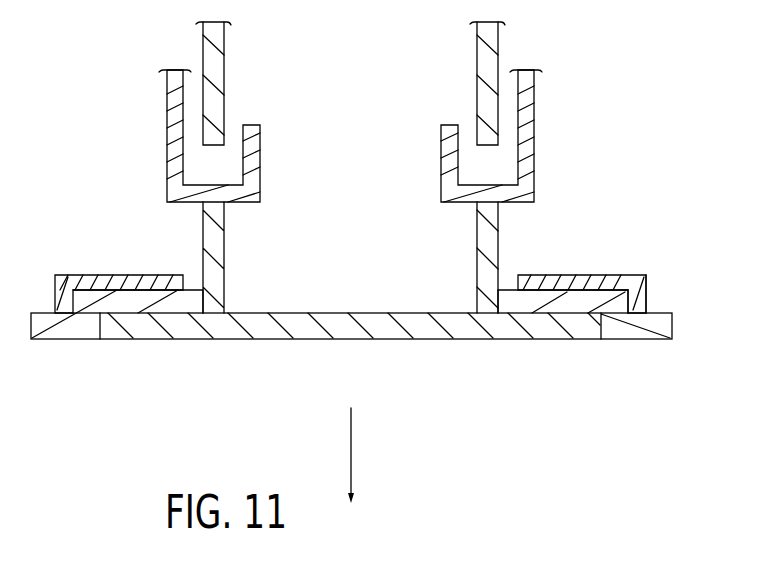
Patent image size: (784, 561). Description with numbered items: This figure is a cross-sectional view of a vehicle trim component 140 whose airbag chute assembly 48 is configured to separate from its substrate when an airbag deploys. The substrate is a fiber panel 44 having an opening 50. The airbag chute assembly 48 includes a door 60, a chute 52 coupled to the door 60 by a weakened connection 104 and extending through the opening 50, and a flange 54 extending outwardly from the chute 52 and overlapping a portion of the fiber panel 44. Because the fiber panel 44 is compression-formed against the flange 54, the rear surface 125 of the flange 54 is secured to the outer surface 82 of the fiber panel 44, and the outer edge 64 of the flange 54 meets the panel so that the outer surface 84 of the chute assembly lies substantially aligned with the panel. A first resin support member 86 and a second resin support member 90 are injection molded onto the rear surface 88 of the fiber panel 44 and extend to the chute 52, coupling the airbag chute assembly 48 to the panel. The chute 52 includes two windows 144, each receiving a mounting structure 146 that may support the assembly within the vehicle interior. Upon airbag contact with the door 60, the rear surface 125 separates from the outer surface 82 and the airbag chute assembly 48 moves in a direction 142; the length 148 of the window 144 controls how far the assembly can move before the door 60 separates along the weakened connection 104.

The fiber panel 44 is at (76, 323).
The airbag chute assembly 48 is at (370, 260).
The opening 50 is at (326, 220).
The chute 52 is at (500, 213).
The flange 54 is at (544, 327).
The door 60 is at (283, 312).
The outer edge 64 is at (605, 318).
The outer surface 82 is at (187, 322).
The outer surface 84 is at (152, 339).
The first resin support member 86 is at (130, 273).
The rear surface 88 is at (97, 275).
The second resin support member 90 is at (549, 281).
The weakened connection 104 is at (493, 300).
The rear surface 125 is at (567, 312).
The vehicle trim component 140 is at (696, 256).
The direction 142 is at (352, 447).
The window 144 is at (205, 162).
The mounting structure 146 is at (168, 163).
The length 148 is at (423, 202).